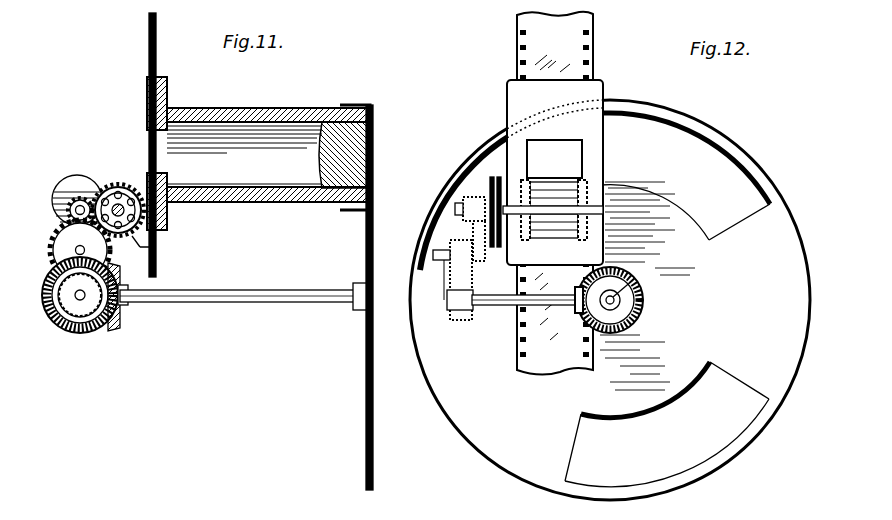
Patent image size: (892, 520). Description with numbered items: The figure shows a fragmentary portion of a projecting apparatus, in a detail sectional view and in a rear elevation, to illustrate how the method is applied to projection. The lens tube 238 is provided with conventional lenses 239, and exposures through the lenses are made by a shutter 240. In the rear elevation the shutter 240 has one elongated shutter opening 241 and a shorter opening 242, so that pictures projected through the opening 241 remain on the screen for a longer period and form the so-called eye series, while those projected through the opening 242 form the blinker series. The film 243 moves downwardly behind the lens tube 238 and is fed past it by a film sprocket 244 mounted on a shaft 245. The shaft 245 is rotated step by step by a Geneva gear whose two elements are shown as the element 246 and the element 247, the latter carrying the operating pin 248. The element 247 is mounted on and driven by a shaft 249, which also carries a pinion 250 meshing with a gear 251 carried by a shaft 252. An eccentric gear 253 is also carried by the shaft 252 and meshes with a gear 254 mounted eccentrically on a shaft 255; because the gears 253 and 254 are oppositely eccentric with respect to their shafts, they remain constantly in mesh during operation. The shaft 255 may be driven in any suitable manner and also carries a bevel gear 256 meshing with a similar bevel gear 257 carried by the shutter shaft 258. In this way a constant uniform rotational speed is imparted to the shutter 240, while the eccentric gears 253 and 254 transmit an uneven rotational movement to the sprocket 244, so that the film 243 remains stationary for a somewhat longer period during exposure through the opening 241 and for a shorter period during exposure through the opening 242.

In FIG. 11, the lens tube 238 is at (270, 108).
In FIG. 11, the lenses 239 is at (322, 158).
In FIG. 11, the shutter 240 is at (373, 140).
In FIG. 12, the shutter 240 is at (478, 432).
In FIG. 12, the elongated shutter opening 241 is at (718, 152).
In FIG. 12, the shorter opening 242 is at (686, 399).
In FIG. 11, the film 243 is at (156, 57).
In FIG. 12, the film 243 is at (530, 372).
In FIG. 11, the film sprocket 244 is at (128, 184).
In FIG. 12, the film sprocket 244 is at (592, 188).
In FIG. 11, the shaft 245 is at (156, 247).
In FIG. 12, the shaft 245 is at (535, 186).
In FIG. 12, the Geneva gear element 246 is at (505, 128).
In FIG. 11, the Geneva gear element 247 is at (90, 176).
In FIG. 12, the Geneva gear element 247 is at (492, 176).
In FIG. 11, the operating pin 248 is at (74, 188).
In FIG. 11, the shaft 249 is at (76, 206).
In FIG. 12, the shaft 249 is at (462, 205).
In FIG. 11, the pinion 250 is at (70, 206).
In FIG. 12, the pinion 250 is at (465, 210).
In FIG. 11, the gear 251 is at (56, 238).
In FIG. 12, the gear 251 is at (470, 238).
In FIG. 11, the shaft 252 is at (75, 252).
In FIG. 12, the shaft 252 is at (438, 262).
In FIG. 11, the eccentric gear 253 is at (60, 272).
In FIG. 12, the eccentric gear 253 is at (458, 250).
In FIG. 11, the gear 254 is at (74, 320).
In FIG. 12, the gear 254 is at (465, 322).
In FIG. 11, the shaft 255 is at (80, 300).
In FIG. 12, the shaft 255 is at (486, 310).
In FIG. 11, the bevel gear 256 is at (60, 312).
In FIG. 12, the bevel gear 256 is at (584, 330).
In FIG. 11, the bevel gear 257 is at (114, 332).
In FIG. 12, the bevel gear 257 is at (635, 324).
In FIG. 11, the shutter shaft 258 is at (190, 292).
In FIG. 12, the shutter shaft 258 is at (650, 278).